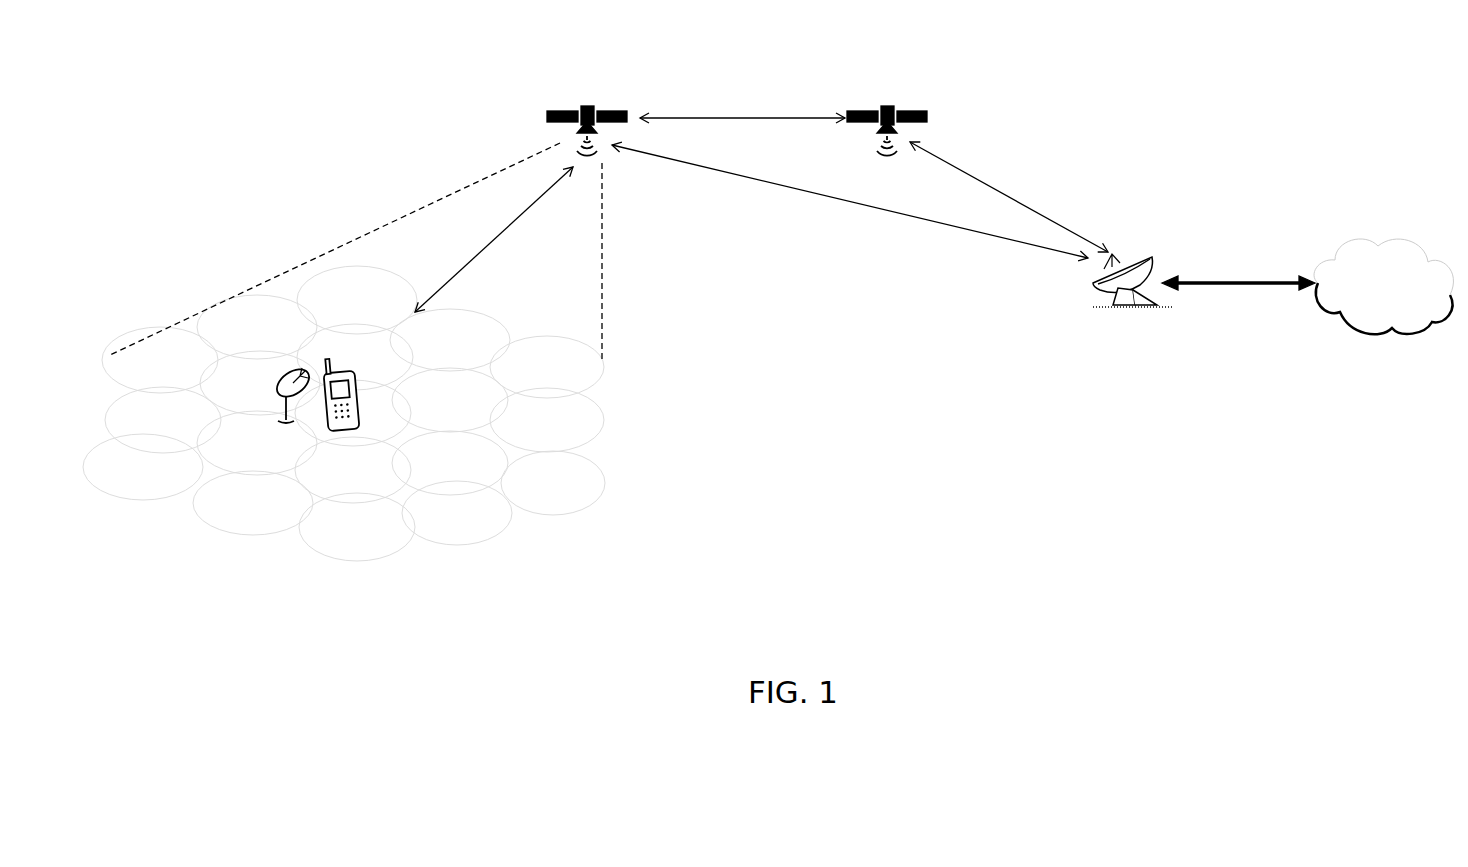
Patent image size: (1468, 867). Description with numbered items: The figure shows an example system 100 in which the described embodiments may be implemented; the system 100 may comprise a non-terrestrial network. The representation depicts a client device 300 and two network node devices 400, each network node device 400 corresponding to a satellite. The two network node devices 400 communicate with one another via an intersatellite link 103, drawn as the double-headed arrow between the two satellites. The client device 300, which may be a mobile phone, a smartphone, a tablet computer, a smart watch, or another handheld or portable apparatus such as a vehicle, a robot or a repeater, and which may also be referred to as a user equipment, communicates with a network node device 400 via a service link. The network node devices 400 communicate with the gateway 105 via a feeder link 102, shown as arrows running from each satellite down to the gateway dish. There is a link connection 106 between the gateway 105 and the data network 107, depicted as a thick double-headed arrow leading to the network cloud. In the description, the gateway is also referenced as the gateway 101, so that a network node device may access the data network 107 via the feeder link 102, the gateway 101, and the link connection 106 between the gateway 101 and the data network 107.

The system 100 is at (275, 120).
The gateway 101 is at (516, 222).
The feeder link 102 is at (718, 170).
The intersatellite link (ISL) 103 is at (686, 116).
The gateway 105 is at (1097, 288).
The link connection 106 is at (1230, 280).
The data network 107 is at (1383, 243).
The client device 300 is at (358, 396).
The network node device 400 is at (546, 115).